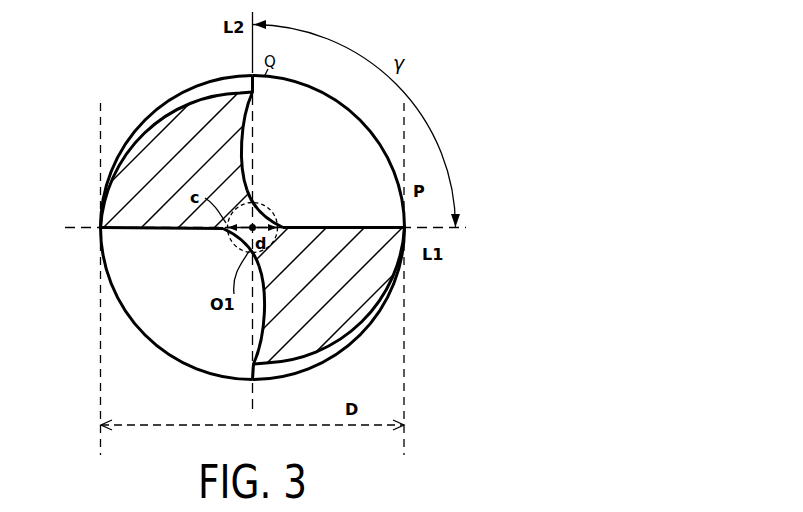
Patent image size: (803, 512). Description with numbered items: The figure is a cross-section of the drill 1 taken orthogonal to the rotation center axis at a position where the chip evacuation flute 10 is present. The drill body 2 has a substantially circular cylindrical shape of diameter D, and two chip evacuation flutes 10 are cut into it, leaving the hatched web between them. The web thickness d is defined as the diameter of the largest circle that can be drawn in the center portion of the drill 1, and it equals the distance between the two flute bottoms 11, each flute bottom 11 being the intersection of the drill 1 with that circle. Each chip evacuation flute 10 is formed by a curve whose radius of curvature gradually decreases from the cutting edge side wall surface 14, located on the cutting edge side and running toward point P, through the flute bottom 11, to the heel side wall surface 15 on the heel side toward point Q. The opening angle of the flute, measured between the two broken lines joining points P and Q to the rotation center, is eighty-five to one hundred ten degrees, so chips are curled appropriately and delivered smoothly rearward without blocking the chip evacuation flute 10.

The drill 1 is at (160, 86).
The drill body 2 is at (374, 312).
The chip evacuation flute 10 is at (328, 153).
The flute bottom 11 is at (265, 207).
The cutting edge side wall surface 14 is at (347, 228).
The heel side wall surface 15 is at (256, 164).